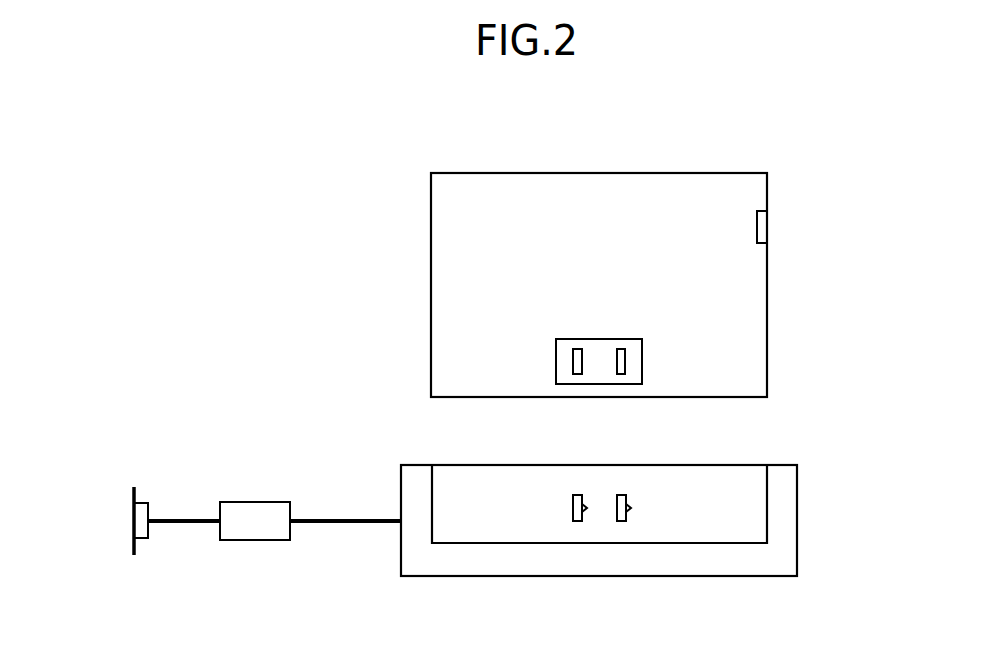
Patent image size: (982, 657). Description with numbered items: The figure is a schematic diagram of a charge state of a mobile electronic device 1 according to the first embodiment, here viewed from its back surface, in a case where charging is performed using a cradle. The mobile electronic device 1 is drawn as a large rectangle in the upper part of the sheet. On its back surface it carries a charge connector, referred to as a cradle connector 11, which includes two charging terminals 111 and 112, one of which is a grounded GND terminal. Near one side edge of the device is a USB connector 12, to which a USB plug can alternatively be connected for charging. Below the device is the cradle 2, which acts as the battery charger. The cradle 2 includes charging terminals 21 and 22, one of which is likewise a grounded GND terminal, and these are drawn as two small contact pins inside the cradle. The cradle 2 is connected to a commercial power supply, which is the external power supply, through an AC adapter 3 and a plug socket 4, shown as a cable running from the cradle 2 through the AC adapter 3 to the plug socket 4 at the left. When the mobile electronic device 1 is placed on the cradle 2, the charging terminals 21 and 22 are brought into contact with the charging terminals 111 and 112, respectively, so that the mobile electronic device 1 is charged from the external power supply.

The mobile electronic device 1 is at (732, 173).
The cradle connector 11 is at (642, 355).
The charging terminal 111 is at (620, 349).
The charging terminal 112 is at (575, 349).
The USB connector 12 is at (767, 227).
The cradle 2 is at (791, 561).
The charging terminal 21 is at (577, 522).
The charging terminal 22 is at (621, 522).
The AC adapter 3 is at (256, 508).
The plug socket 4 is at (142, 503).